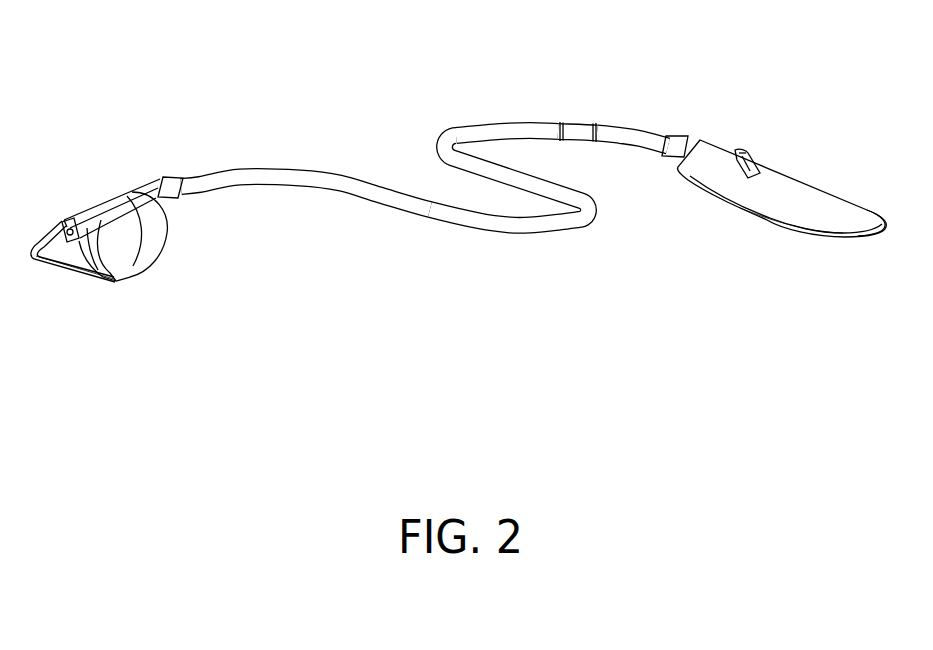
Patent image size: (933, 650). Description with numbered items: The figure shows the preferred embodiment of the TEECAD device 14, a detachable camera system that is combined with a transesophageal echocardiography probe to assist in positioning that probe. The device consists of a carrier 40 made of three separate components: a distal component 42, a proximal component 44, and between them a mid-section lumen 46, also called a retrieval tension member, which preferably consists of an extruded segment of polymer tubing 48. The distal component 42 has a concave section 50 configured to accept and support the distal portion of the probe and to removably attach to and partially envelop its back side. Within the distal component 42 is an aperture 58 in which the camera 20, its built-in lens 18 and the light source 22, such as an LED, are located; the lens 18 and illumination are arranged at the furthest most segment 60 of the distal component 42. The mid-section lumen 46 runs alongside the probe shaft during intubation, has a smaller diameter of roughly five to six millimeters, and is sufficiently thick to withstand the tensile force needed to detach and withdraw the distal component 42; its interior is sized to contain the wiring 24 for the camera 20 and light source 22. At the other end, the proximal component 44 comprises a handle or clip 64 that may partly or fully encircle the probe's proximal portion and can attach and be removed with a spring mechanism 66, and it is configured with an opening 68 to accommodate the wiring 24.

The TEECAD device 14 is at (499, 76).
The lens 18 is at (87, 225).
The camera 20 is at (97, 218).
The light source 22 is at (115, 223).
The wiring 24 is at (574, 129).
The carrier 40 is at (197, 172).
The distal component 42 is at (100, 217).
The proximal component 44 is at (807, 185).
The mid-section lumen 46 is at (460, 233).
The polymer tubing 48 is at (312, 173).
The concave section 50 is at (78, 268).
The aperture 58 is at (63, 224).
The furthest most segment 60 is at (61, 222).
The handle or clip 64 is at (778, 208).
The spring mechanism 66 is at (858, 204).
The opening 68 is at (748, 164).